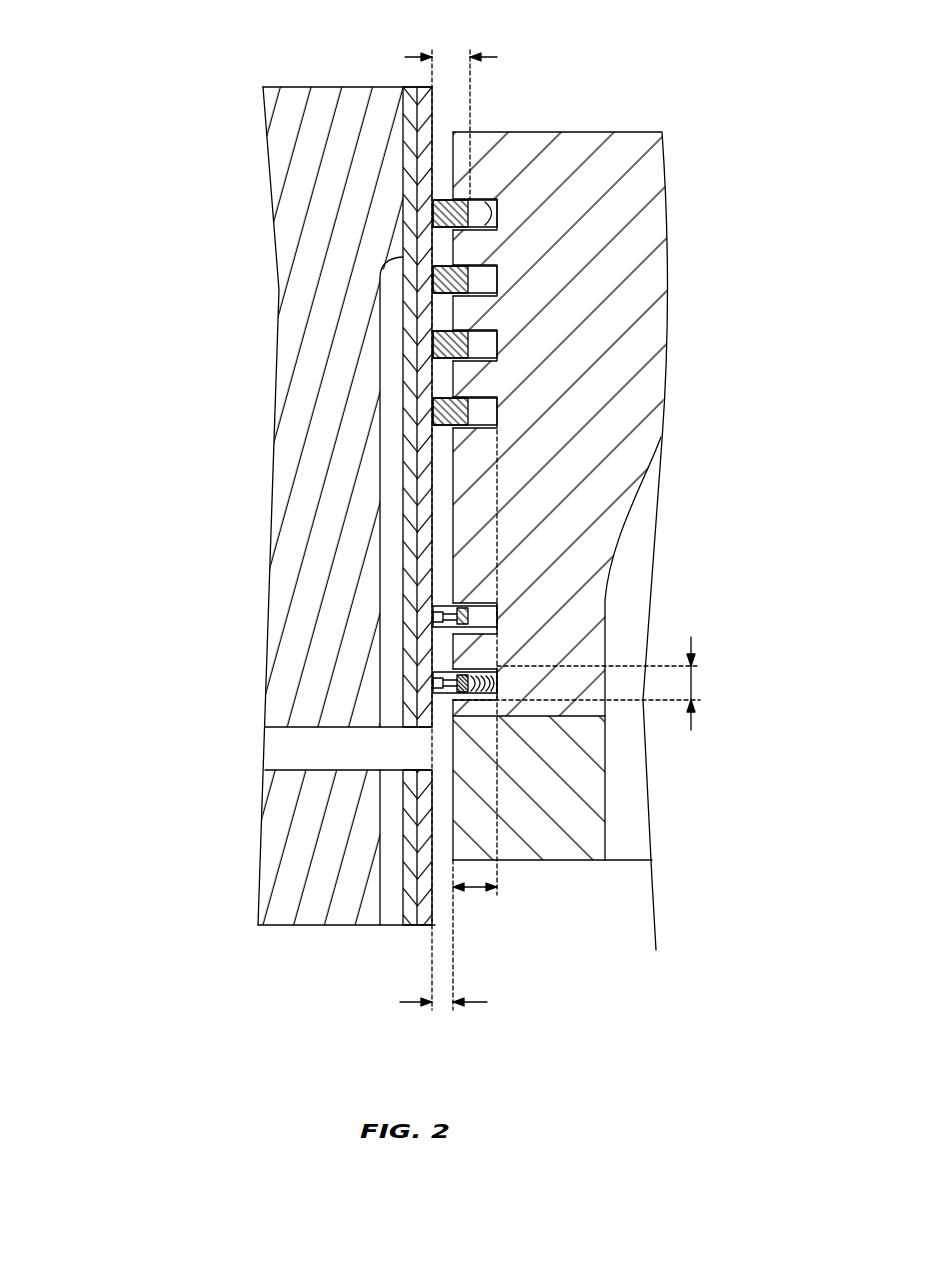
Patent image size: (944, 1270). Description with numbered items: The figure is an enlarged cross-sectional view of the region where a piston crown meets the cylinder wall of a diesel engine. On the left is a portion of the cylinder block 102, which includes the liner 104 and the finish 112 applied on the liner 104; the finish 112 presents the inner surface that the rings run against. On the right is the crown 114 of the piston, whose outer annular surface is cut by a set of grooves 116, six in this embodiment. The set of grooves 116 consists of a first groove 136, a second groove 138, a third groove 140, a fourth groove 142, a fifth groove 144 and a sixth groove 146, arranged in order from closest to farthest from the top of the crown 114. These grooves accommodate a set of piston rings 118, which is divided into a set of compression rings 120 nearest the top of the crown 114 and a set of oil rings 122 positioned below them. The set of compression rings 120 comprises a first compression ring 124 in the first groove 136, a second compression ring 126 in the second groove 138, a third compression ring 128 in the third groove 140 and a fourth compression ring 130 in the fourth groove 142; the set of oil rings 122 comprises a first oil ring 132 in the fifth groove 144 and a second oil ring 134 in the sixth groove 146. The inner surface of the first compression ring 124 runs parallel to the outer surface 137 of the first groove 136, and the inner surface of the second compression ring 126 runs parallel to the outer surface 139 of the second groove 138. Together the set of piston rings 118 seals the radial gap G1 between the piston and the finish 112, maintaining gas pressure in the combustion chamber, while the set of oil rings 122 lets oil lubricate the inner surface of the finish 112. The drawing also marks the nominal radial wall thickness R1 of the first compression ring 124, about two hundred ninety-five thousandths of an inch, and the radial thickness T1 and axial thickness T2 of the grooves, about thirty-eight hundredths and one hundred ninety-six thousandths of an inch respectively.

The cylinder block 102 is at (330, 118).
The liner 104 is at (410, 913).
The finish 112 is at (425, 926).
The crown 114 is at (628, 153).
The set of grooves 116 is at (735, 200).
The set of piston rings 118 is at (147, 288).
The set of compression rings 120 is at (213, 193).
The set of oil rings 122 is at (200, 592).
The first compression ring 124 is at (433, 213).
The second compression ring 126 is at (433, 280).
The third compression ring 128 is at (433, 345).
The fourth compression ring 130 is at (433, 412).
The first oil ring 132 is at (433, 615).
The second oil ring 134 is at (433, 683).
The first groove 136 is at (497, 205).
The outer surface of the first groove 137 is at (488, 210).
The second groove 138 is at (497, 270).
The outer surface of the second groove 139 is at (470, 215).
The third groove 140 is at (497, 335).
The fourth groove 142 is at (497, 402).
The fifth groove 144 is at (497, 607).
The sixth groove 146 is at (497, 676).
The nominal wall thickness R1 is at (452, 55).
The radial gap G1 is at (444, 1004).
The radial thickness T1 is at (487, 896).
The axial thickness T2 is at (691, 683).